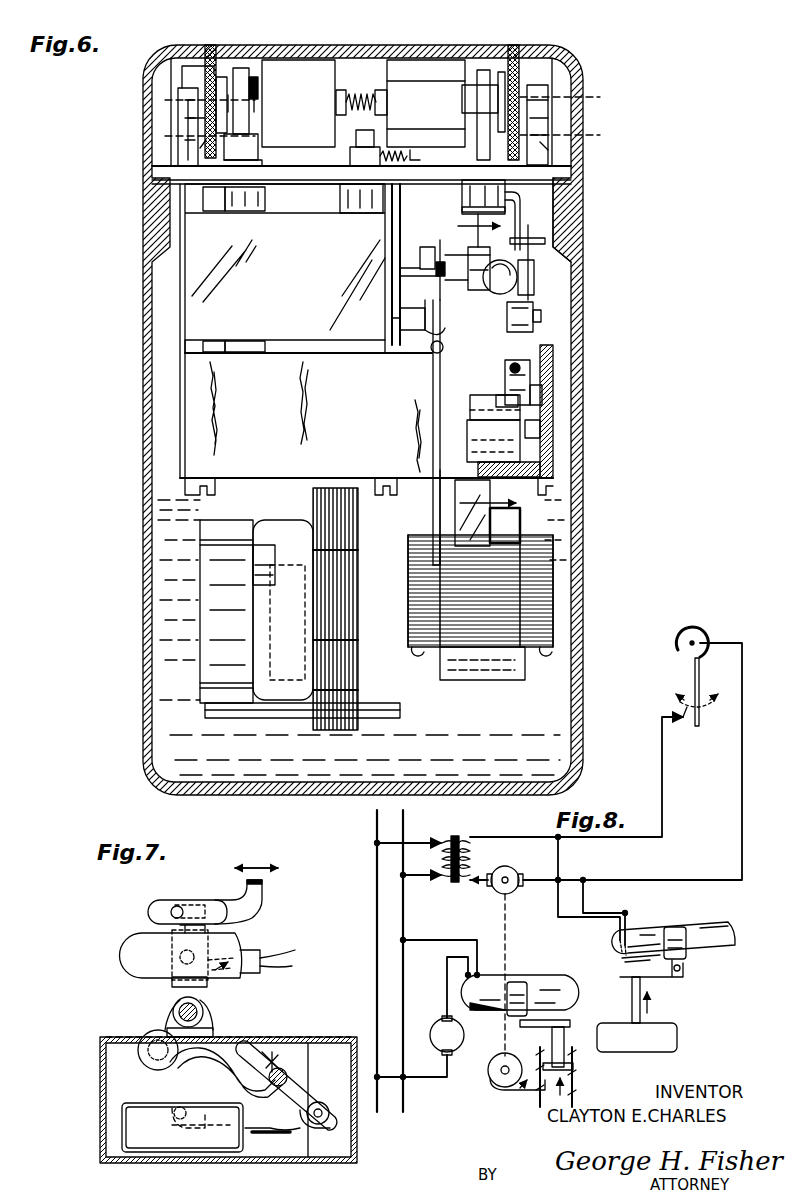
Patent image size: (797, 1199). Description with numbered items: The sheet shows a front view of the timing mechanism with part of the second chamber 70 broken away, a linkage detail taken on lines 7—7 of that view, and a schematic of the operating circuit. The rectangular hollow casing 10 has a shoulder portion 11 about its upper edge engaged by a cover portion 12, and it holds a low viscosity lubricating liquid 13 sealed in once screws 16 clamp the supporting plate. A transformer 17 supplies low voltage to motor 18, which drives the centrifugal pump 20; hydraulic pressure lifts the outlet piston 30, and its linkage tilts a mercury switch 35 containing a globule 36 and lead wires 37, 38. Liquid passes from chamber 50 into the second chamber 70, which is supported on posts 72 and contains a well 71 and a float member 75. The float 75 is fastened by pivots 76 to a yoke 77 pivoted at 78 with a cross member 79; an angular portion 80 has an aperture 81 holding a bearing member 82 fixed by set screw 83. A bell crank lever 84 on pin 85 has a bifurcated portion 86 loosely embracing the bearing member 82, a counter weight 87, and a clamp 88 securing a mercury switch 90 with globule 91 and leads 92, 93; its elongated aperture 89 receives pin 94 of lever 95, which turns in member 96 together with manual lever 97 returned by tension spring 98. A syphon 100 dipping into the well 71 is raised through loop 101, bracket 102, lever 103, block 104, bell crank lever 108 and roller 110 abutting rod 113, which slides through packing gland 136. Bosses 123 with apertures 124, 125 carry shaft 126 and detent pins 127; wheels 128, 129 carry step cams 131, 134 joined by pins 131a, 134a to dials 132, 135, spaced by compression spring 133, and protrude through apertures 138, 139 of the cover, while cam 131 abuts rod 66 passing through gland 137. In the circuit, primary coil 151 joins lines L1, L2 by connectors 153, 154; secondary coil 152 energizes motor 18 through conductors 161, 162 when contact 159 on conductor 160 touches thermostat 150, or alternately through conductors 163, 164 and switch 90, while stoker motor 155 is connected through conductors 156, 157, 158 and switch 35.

In FIG. 6, the casing 10 is at (505, 41).
In FIG. 6, the shoulder portion 11 is at (582, 220).
In FIG. 6, the cover portion 12 is at (425, 52).
In FIG. 6, the liquid 13 is at (575, 492).
In FIG. 6, the screws 16 is at (398, 637).
In FIG. 6, the transformer 17 is at (555, 604).
In FIG. 8, the transformer 17 is at (458, 835).
In FIG. 6, the motor 18 is at (358, 712).
In FIG. 8, the motor 18 is at (518, 893).
In FIG. 8, the pump 20 is at (495, 1085).
In FIG. 8, the piston 30 is at (574, 1063).
In FIG. 8, the mercury switch 35 is at (542, 980).
In FIG. 8, the mercury globule 36 is at (485, 1010).
In FIG. 8, the lead wire 37 is at (466, 976).
In FIG. 8, the lead wire 38 is at (479, 973).
In FIG. 6, the chamber 50 is at (282, 331).
In FIG. 6, the rod 66 is at (258, 150).
In FIG. 6, the chamber 70 is at (194, 664).
In FIG. 7, the chamber 70 is at (103, 1110).
In FIG. 6, the well 71 is at (433, 530).
In FIG. 6, the posts 72 is at (205, 478).
In FIG. 6, the float member 75 is at (495, 407).
In FIG. 7, the float member 75 is at (132, 1108).
In FIG. 8, the float member 75 is at (677, 1040).
In FIG. 6, the pivot 76 is at (542, 432).
In FIG. 7, the pivot 76 is at (172, 1105).
In FIG. 7, the yoke 77 is at (240, 1095).
In FIG. 7, the pivot 78 is at (322, 1125).
In FIG. 6, the cross member 79 is at (486, 452).
In FIG. 7, the cross member 79 is at (270, 1133).
In FIG. 6, the angular portion 80 is at (523, 359).
In FIG. 7, the angular portion 80 is at (322, 1102).
In FIG. 7, the aperture 81 is at (296, 1130).
In FIG. 6, the bearing member 82 is at (512, 375).
In FIG. 7, the bearing member 82 is at (290, 1072).
In FIG. 7, the set screw 83 is at (258, 1062).
In FIG. 6, the bell crank lever 84 is at (505, 366).
In FIG. 7, the bell crank lever 84 is at (167, 1030).
In FIG. 6, the pin 85 is at (507, 330).
In FIG. 7, the pin 85 is at (205, 1008).
In FIG. 6, the bifurcated portion 86 is at (553, 373).
In FIG. 7, the bifurcated portion 86 is at (290, 1048).
In FIG. 6, the counter weight 87 is at (542, 395).
In FIG. 7, the counter weight 87 is at (140, 1038).
In FIG. 7, the clamp 88 is at (172, 990).
In FIG. 7, the elongated aperture 89 is at (198, 898).
In FIG. 6, the mercury switch 90 is at (503, 294).
In FIG. 7, the mercury switch 90 is at (120, 950).
In FIG. 8, the mercury switch 90 is at (720, 922).
In FIG. 7, the mercury globule 91 is at (225, 978).
In FIG. 8, the mercury globule 91 is at (625, 960).
In FIG. 7, the lead 92 is at (245, 960).
In FIG. 8, the lead 92 is at (616, 934).
In FIG. 7, the lead 93 is at (280, 966).
In FIG. 8, the lead 93 is at (625, 913).
In FIG. 6, the pin 94 is at (530, 250).
In FIG. 7, the pin 94 is at (170, 908).
In FIG. 6, the lever 95 is at (520, 211).
In FIG. 7, the lever 95 is at (262, 904).
In FIG. 6, the member 96 is at (348, 195).
In FIG. 6, the manually operable lever 97 is at (350, 157).
In FIG. 6, the tension spring 98 is at (395, 160).
In FIG. 6, the syphon 100 is at (433, 382).
In FIG. 6, the loop 101 is at (431, 350).
In FIG. 6, the bracket 102 is at (445, 328).
In FIG. 6, the lever 103 is at (416, 264).
In FIG. 6, the block 104 is at (400, 318).
In FIG. 6, the bell crank lever 108 is at (462, 266).
In FIG. 6, the frictionless roller 110 is at (468, 250).
In FIG. 6, the rod 113 is at (462, 216).
In FIG. 6, the bosses 123 is at (186, 118).
In FIG. 6, the apertures 124 is at (165, 100).
In FIG. 6, the apertures 125 is at (165, 138).
In FIG. 6, the shaft 126 is at (345, 90).
In FIG. 6, the detent pins 127 is at (200, 148).
In FIG. 6, the wheel 128 is at (211, 45).
In FIG. 6, the wheel 129 is at (517, 45).
In FIG. 6, the step cam 131 is at (241, 68).
In FIG. 6, the connecting pin 131a is at (255, 77).
In FIG. 6, the cylindrical dial 132 is at (300, 60).
In FIG. 6, the compression spring 133 is at (360, 94).
In FIG. 6, the step cam 134 is at (483, 70).
In FIG. 6, the pin 134a is at (468, 85).
In FIG. 6, the cylindrical dial 135 is at (398, 62).
In FIG. 6, the packing gland 136 is at (470, 194).
In FIG. 6, the packing gland 137 is at (240, 212).
In FIG. 6, the aperture 138 is at (205, 50).
In FIG. 6, the aperture 139 is at (520, 50).
In FIG. 8, the thermostat 150 is at (700, 708).
In FIG. 8, the primary coil 151 is at (442, 858).
In FIG. 8, the secondary coil 152 is at (472, 852).
In FIG. 8, the connector 153 is at (416, 843).
In FIG. 8, the connector 154 is at (416, 875).
In FIG. 8, the motor 155 is at (440, 1020).
In FIG. 8, the conductor 156 is at (430, 1078).
In FIG. 8, the conductor 157 is at (447, 963).
In FIG. 8, the conductor 158 is at (437, 940).
In FIG. 8, the contact 159 is at (686, 720).
In FIG. 8, the conductor 160 is at (662, 764).
In FIG. 8, the lead 161 is at (480, 882).
In FIG. 8, the conductor 162 is at (695, 882).
In FIG. 8, the conductor 163 is at (560, 855).
In FIG. 8, the conductor 164 is at (586, 885).
In FIG. 8, the power line L1 is at (377, 884).
In FIG. 8, the power line L2 is at (403, 902).
In FIG. 6, the section line 7 is at (486, 382).